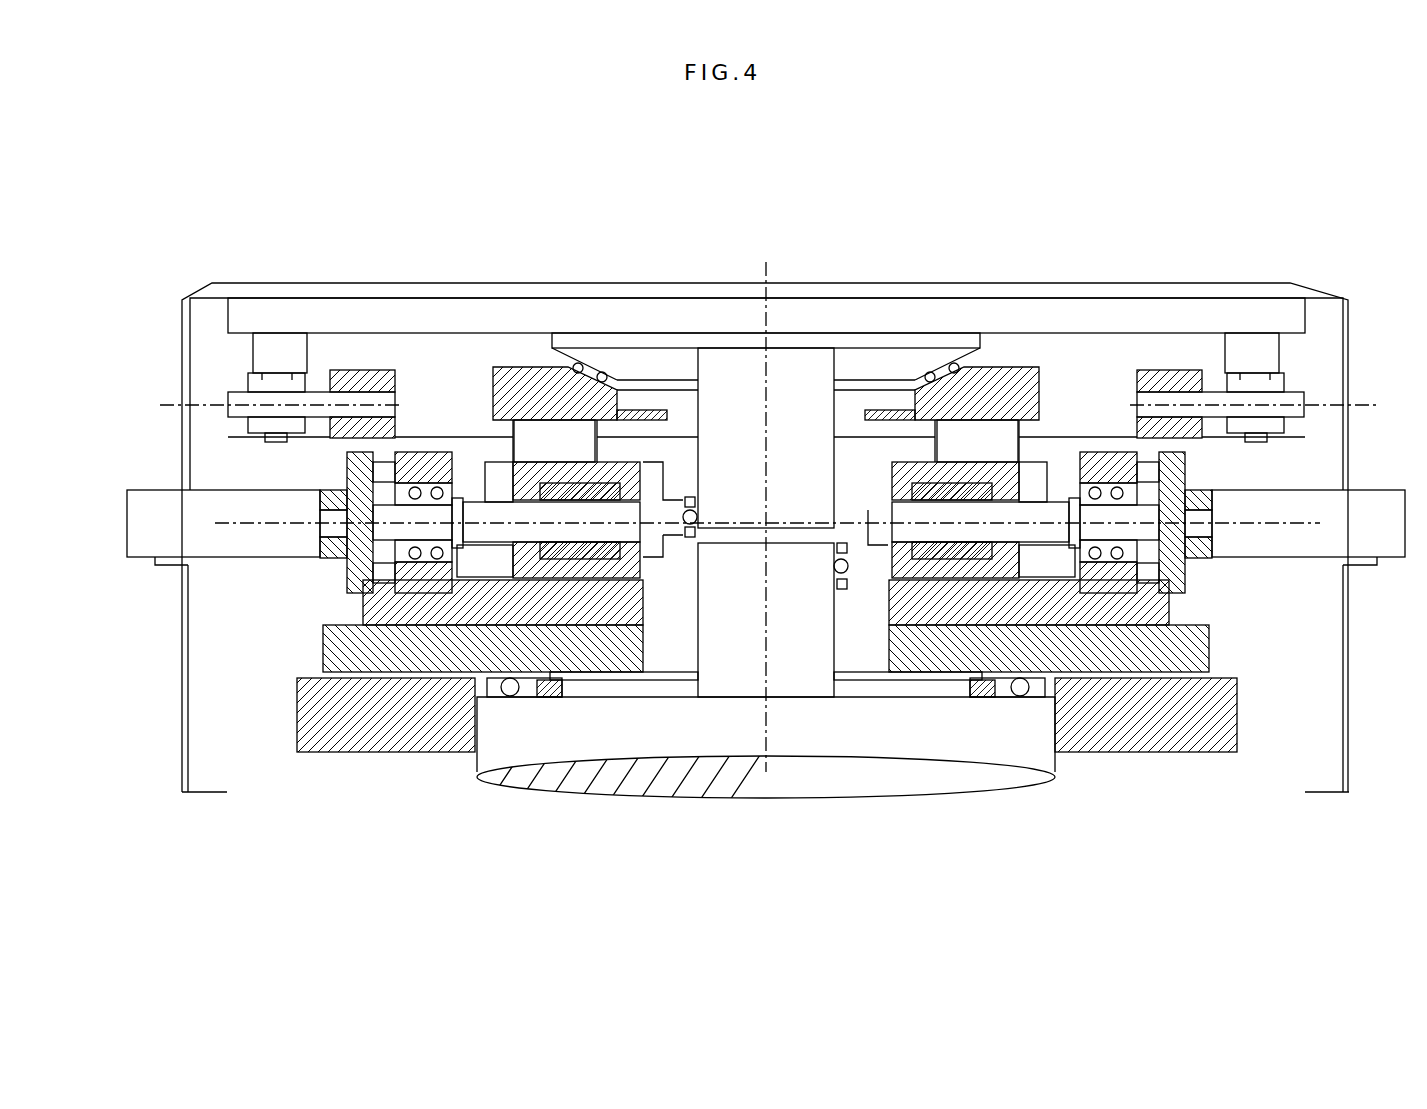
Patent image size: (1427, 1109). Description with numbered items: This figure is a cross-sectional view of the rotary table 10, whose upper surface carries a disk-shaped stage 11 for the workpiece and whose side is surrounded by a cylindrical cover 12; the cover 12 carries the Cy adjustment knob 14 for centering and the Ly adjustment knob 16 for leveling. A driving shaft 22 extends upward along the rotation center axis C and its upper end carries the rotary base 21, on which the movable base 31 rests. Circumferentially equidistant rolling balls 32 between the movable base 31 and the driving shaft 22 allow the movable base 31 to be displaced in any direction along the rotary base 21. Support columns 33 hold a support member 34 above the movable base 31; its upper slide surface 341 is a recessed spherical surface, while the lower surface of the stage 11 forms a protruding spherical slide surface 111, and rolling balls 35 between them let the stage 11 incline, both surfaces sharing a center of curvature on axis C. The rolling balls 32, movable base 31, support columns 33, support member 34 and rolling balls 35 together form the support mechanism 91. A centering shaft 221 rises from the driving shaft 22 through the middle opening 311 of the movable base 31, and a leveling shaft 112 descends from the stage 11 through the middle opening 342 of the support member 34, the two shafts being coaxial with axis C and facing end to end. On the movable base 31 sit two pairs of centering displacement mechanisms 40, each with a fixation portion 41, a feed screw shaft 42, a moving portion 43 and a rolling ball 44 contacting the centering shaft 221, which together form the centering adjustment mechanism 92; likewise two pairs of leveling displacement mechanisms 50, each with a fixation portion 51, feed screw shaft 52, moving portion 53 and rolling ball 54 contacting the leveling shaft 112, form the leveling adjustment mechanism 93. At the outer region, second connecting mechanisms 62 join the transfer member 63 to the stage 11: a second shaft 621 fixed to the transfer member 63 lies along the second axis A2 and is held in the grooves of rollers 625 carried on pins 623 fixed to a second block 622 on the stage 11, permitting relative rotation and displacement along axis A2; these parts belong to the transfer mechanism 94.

The rotary table 10 is at (1308, 194).
The stage 11 is at (1292, 300).
The cover 12 is at (1362, 303).
The Cy adjustment knob 14 is at (1388, 488).
The Ly adjustment knob 16 is at (148, 488).
The rotary base 21 is at (400, 700).
The driving shaft 22 is at (736, 737).
The centering shaft 221 is at (745, 635).
The movable base 31 is at (600, 650).
The middle opening 311 is at (652, 605).
The rolling balls 32 is at (511, 692).
The support columns 33 is at (1030, 435).
The support member 34 is at (1000, 395).
The slide surface 341 is at (920, 382).
The middle opening 342 is at (862, 413).
The rolling balls 35 is at (960, 362).
The centering displacement mechanisms 40 is at (1050, 880).
The fixation portion 41 is at (1098, 580).
The feed screw shaft 42 is at (982, 530).
The moving portion 43 is at (908, 565).
The rolling ball 44 is at (842, 575).
The leveling displacement mechanisms 50 is at (663, 190).
The fixation portion 51 is at (420, 445).
The feed screw shaft 52 is at (473, 497).
The moving portion 53 is at (633, 458).
The rolling ball 54 is at (691, 510).
The second connecting mechanisms 62 is at (769, 406).
The second shaft 621 is at (343, 380).
The second block 622 is at (263, 398).
The pins 623 is at (275, 443).
The roller 625 is at (281, 348).
The transfer member 63 is at (385, 368).
The support mechanism 91 is at (684, 894).
The centering adjustment mechanism 92 is at (1057, 950).
The leveling adjustment mechanism 93 is at (467, 102).
The transfer mechanism 94 is at (345, 160).
The slide surface 111 is at (1003, 440).
The leveling shaft 112 is at (803, 403).
The second axis A2 is at (172, 403).
The rotation center axis C is at (758, 268).